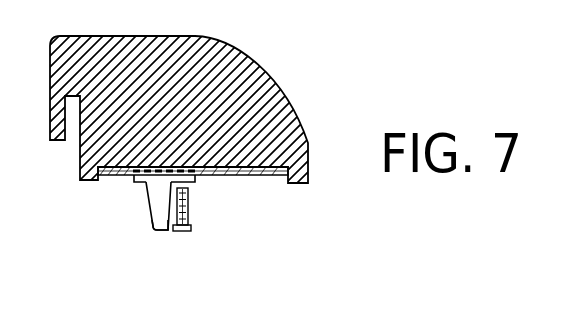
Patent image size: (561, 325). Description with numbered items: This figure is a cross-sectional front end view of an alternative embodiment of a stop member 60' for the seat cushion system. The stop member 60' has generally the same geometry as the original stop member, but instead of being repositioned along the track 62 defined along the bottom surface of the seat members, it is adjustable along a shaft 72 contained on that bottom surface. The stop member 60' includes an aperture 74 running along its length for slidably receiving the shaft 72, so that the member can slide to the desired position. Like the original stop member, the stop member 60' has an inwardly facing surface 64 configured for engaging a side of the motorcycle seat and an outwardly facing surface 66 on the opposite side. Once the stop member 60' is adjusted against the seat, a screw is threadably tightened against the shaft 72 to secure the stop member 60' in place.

The track 62 is at (113, 189).
The shaft 72 is at (270, 176).
The aperture 74 is at (147, 182).
The stop member 60' is at (122, 229).
The inwardly facing surface 64 is at (152, 231).
The outwardly facing surface 66 is at (192, 230).